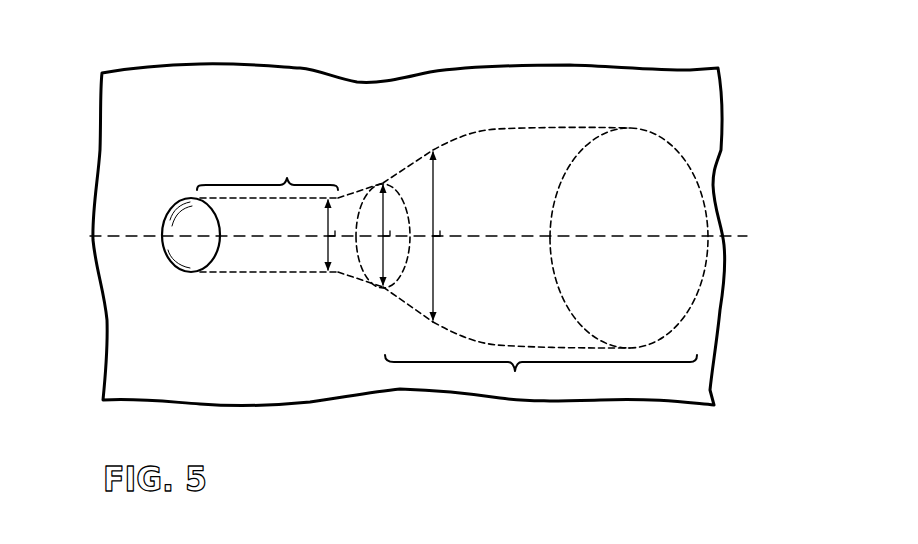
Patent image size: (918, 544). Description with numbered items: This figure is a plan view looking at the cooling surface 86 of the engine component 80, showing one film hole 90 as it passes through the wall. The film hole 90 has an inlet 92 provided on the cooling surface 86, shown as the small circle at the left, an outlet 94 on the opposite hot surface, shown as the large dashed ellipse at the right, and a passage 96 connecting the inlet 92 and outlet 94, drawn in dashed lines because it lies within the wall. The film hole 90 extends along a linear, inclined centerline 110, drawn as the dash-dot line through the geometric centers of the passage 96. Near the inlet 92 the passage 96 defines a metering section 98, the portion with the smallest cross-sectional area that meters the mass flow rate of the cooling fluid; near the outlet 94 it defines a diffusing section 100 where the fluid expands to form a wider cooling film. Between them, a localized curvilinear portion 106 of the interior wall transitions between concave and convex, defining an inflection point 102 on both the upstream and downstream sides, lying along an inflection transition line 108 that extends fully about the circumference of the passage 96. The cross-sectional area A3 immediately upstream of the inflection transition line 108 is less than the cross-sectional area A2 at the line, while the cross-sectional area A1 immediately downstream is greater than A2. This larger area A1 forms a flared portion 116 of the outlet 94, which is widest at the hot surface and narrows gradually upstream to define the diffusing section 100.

The engine component 80 is at (645, 108).
The cooling surface 86 is at (613, 113).
The film hole 90 is at (187, 185).
The inlet 92 is at (209, 252).
The outlet 94 is at (642, 293).
The passage 96 is at (466, 196).
The metering section 98 is at (268, 215).
The diffusing section 100 is at (541, 376).
The inflection point 102 is at (383, 182).
The localized curvilinear portion 106 is at (346, 187).
The inflection transition line 108 is at (355, 245).
The centerline 110 is at (733, 237).
The flared portion 116 is at (458, 140).
The cross-sectional area immediately downstream of the inflection transition line A1 is at (433, 238).
The cross-sectional area at the inflection transition line A2 is at (380, 239).
The cross-sectional area immediately upstream of the inflection transition line A3 is at (327, 236).